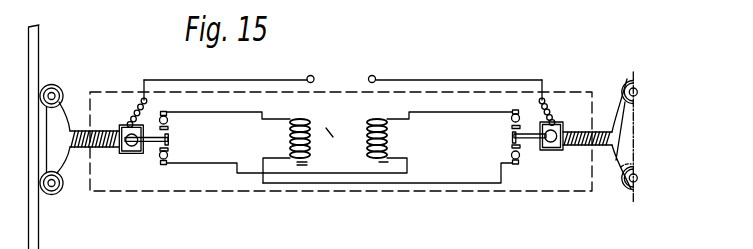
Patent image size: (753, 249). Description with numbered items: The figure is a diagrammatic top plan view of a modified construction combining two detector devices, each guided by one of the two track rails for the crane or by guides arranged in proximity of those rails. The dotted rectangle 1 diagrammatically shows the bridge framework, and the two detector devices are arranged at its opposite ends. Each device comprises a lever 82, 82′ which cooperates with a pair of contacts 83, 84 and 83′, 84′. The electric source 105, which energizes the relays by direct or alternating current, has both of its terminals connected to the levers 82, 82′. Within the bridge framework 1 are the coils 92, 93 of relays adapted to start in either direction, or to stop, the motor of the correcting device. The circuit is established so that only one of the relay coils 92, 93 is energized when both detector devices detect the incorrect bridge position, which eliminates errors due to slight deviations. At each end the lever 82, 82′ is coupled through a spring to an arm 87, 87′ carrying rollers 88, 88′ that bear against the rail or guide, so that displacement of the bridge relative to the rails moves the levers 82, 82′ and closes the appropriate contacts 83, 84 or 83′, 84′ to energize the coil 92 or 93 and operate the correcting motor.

The dotted rectangle 1 is at (213, 182).
The lever 82 is at (538, 148).
The lever 82' is at (148, 149).
The contact 83 is at (493, 126).
The contact 83' is at (182, 129).
The contact 84 is at (493, 156).
The contact 84' is at (182, 153).
The lever arm 87 is at (597, 151).
The lever arm 87' is at (83, 159).
The rollers 88 is at (617, 124).
The rollers 88' is at (62, 155).
The relay coil 92 is at (304, 166).
The relay coil 93 is at (383, 164).
The electric source 105 is at (368, 75).